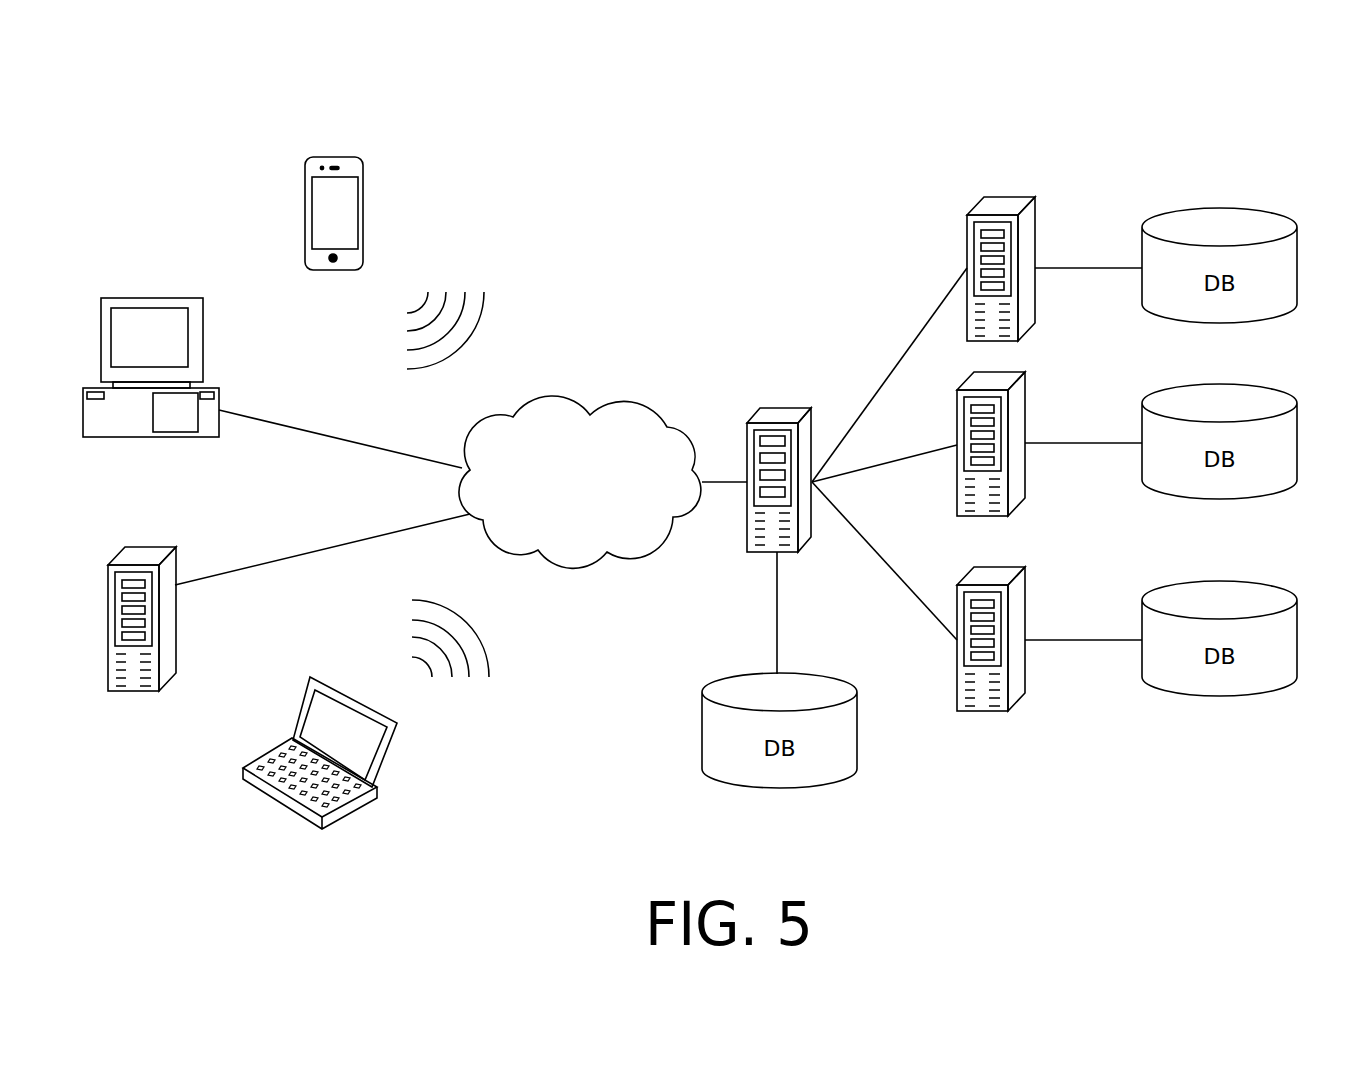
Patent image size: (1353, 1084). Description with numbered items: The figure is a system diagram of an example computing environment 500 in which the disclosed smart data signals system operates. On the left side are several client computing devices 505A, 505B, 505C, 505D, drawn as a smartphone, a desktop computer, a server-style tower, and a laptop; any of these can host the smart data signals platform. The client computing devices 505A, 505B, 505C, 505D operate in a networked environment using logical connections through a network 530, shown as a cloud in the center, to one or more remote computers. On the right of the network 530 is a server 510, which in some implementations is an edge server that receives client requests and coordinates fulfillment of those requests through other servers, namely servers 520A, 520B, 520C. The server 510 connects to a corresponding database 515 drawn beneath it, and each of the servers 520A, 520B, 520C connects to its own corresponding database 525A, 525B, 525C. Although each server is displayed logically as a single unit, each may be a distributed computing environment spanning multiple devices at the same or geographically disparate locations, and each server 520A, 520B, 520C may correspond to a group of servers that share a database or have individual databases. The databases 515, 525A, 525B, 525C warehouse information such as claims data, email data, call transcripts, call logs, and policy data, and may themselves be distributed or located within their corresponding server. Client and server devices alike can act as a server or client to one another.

The environment 500 is at (214, 104).
The client computing device 505A is at (356, 165).
The client computing device 505B is at (203, 317).
The client computing device 505C is at (165, 551).
The client computing device 505D is at (378, 782).
The network 530 is at (610, 414).
The server 510 is at (794, 413).
The database 515 is at (777, 687).
The server 520A is at (1005, 203).
The server 520B is at (995, 377).
The server 520C is at (995, 574).
The database 525A is at (1218, 219).
The database 525B is at (1218, 396).
The database 525C is at (1218, 593).